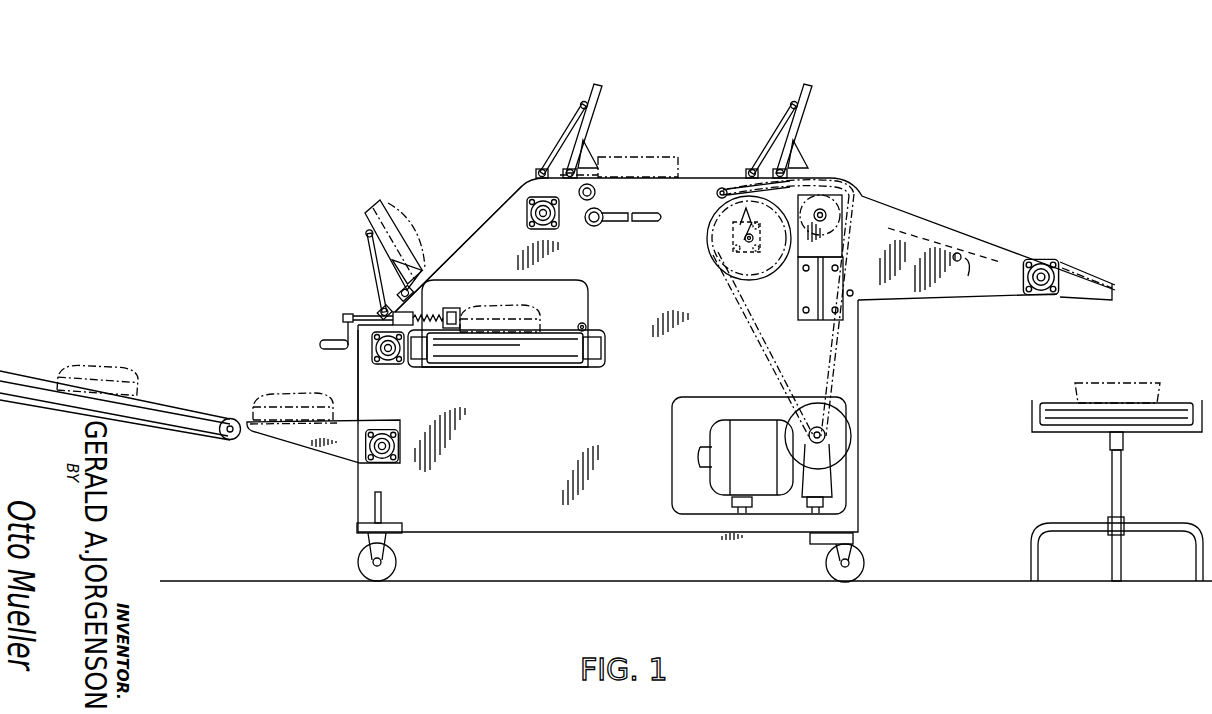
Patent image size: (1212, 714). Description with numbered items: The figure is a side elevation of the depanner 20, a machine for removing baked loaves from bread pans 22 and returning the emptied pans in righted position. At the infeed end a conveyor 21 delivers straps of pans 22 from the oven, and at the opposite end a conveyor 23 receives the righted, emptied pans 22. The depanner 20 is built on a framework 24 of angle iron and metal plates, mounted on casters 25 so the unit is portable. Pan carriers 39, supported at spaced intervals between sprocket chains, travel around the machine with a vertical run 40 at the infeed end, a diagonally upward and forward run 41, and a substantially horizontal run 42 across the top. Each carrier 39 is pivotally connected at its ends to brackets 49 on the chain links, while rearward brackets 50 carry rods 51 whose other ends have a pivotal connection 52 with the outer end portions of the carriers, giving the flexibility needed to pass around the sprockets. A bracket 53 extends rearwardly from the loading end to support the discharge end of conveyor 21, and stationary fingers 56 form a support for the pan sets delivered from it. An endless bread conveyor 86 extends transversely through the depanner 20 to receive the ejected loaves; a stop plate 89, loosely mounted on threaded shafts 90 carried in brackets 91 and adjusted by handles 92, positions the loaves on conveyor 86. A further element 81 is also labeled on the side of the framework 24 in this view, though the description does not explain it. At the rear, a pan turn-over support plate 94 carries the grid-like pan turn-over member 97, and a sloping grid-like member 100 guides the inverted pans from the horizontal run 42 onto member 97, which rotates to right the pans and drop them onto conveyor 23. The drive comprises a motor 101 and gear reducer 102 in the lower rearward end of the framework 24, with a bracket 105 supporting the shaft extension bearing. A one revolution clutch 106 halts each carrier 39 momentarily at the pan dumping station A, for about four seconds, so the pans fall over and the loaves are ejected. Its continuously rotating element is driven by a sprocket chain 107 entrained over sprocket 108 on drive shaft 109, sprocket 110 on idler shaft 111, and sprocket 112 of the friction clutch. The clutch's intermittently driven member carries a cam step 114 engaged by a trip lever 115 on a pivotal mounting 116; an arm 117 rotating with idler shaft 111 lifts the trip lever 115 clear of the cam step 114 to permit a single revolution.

The depanner 20 is at (512, 192).
The conveyor 21 is at (178, 408).
The pans 22 is at (130, 378).
The conveyor 23 is at (1034, 420).
The framework 24 is at (563, 457).
The casters 25 is at (397, 562).
The pan carriers 39 is at (372, 206).
The vertical run 40 is at (357, 388).
The diagonally upward and forward run 41 is at (469, 233).
The horizontal run 42 is at (642, 177).
The brackets 49 is at (376, 270).
The brackets 50 is at (383, 309).
The rods 51 is at (400, 290).
The pivotal connection 52 is at (364, 230).
The bracket 53 is at (340, 456).
The stationary fingers 56 is at (300, 428).
The adjusting bolt 81 is at (622, 224).
The endless bread conveyor 86 is at (520, 355).
The stop plate 89 is at (454, 306).
The shafts 90 is at (354, 326).
The brackets 91 is at (451, 258).
The handles 92 is at (338, 335).
The pan turn-over support plate 94 is at (987, 238).
The pan turn-over member 97 is at (1013, 270).
The grid-like member 100 is at (914, 235).
The motor 101 is at (748, 420).
The gear reducer 102 is at (836, 438).
The bracket 105 is at (805, 297).
The one revolution clutch 106 is at (830, 214).
The sprocket chain 107 is at (843, 340).
The sprocket 108 is at (812, 428).
The drive shaft 109 is at (825, 434).
The sprocket 110 is at (737, 268).
The idler shaft 111 is at (745, 242).
The sprocket 112 is at (793, 256).
The cam step 114 is at (818, 205).
The trip lever 115 is at (727, 190).
The pivotal mounting 116 is at (716, 196).
The arm 117 is at (731, 223).
The pan dumping station A is at (580, 170).